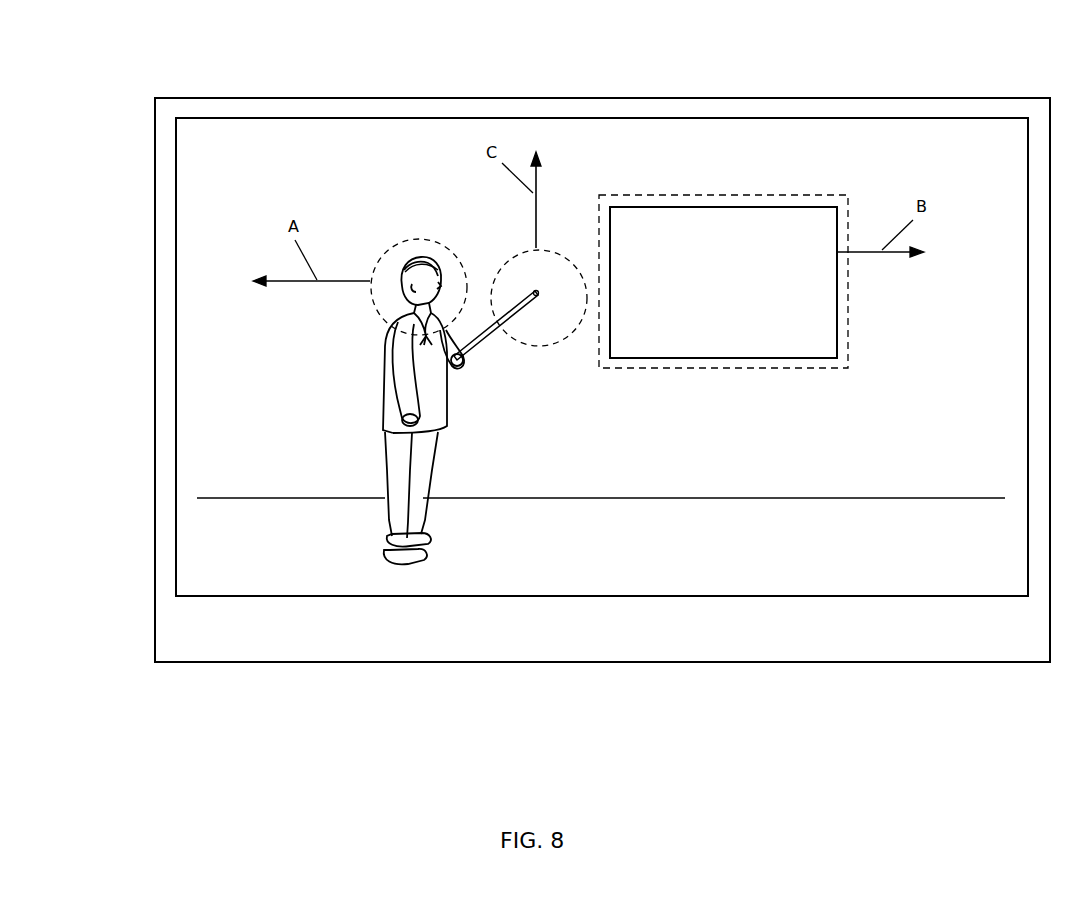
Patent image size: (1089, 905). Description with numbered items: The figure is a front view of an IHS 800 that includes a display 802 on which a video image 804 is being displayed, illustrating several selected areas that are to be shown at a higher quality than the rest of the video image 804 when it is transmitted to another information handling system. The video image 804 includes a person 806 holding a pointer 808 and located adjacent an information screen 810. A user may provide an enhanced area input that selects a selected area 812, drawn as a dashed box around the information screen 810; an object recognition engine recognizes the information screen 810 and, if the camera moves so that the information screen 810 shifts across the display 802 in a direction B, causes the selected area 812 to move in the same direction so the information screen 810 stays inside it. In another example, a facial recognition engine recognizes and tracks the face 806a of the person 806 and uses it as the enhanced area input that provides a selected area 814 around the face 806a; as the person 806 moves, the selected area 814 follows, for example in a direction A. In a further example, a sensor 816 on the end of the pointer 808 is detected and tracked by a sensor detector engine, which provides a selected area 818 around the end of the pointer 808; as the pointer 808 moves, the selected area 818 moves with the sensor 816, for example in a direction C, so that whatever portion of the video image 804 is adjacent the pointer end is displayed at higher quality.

The IHS 800 is at (1009, 649).
The display 802 is at (176, 410).
The video image 804 is at (362, 183).
The person 806 is at (382, 397).
The face 806a is at (440, 280).
The pointer 808 is at (492, 335).
The information screen 810 is at (827, 230).
The selected area 812 is at (848, 327).
The selected area 814 is at (426, 238).
The sensor 816 is at (536, 293).
The selected area 818 is at (565, 337).